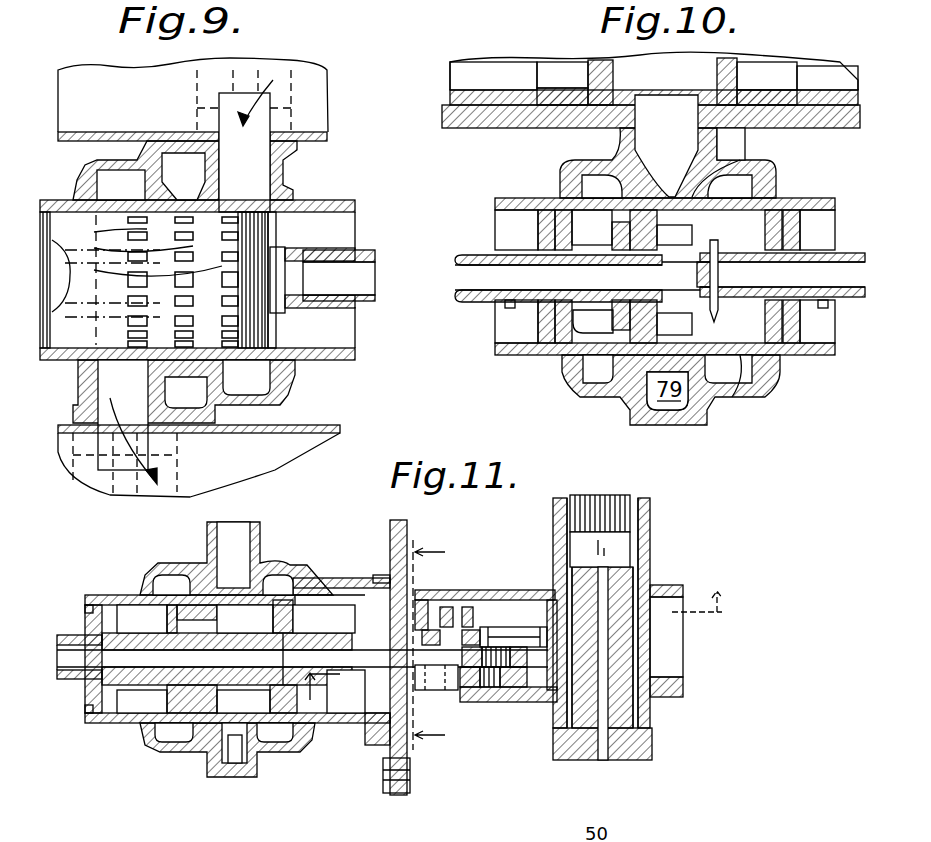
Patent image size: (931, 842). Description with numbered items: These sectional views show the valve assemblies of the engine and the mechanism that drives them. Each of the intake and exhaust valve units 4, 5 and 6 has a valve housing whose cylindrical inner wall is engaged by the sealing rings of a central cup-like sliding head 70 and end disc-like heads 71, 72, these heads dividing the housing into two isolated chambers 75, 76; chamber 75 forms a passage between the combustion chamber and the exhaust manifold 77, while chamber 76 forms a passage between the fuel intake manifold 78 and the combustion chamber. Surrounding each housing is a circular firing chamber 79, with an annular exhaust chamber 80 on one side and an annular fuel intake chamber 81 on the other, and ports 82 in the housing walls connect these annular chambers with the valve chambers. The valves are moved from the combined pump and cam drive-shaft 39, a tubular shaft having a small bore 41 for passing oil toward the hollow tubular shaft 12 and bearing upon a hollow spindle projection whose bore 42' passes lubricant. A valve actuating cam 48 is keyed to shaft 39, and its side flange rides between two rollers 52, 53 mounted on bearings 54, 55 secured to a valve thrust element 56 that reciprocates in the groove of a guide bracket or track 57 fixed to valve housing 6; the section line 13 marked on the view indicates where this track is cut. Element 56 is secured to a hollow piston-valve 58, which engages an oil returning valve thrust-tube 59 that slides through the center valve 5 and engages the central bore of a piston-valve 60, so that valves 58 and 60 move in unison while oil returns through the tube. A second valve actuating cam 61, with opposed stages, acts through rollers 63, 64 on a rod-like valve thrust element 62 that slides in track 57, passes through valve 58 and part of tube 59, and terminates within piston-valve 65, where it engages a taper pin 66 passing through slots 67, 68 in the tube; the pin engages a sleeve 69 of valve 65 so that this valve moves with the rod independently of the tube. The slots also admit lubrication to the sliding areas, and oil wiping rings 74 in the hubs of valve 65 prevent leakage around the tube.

In FIG. 9, the intake and exhaust valve unit 4 is at (334, 200).
In FIG. 10, the center valve 5 is at (497, 199).
In FIG. 11, the valve housing 6 is at (172, 768).
In FIG. 11, the hollow tubular shaft 12 is at (519, 636).
In FIG. 11, the section line 13 is at (443, 644).
In FIG. 11, the combined pump and cam drive-shaft 39 is at (650, 530).
In FIG. 11, the small bore 41 is at (605, 760).
In FIG. 11, the bore 42' is at (628, 511).
In FIG. 11, the valve actuating cam 48 is at (670, 587).
In FIG. 11, the roller 52 is at (450, 612).
In FIG. 11, the roller 53 is at (474, 615).
In FIG. 11, the bearing 54 is at (360, 578).
In FIG. 11, the bearing 55 is at (505, 593).
In FIG. 11, the valve thrust element 56 is at (432, 622).
In FIG. 11, the guide bracket or track 57 is at (545, 612).
In FIG. 11, the hollow piston-valve 58 is at (145, 640).
In FIG. 9, the oil returning valve thrust-tube 59 is at (362, 250).
In FIG. 10, the oil returning valve thrust-tube 59 is at (478, 255).
In FIG. 11, the oil returning valve thrust-tube 59 is at (84, 682).
In FIG. 9, the piston-valve 60 is at (268, 229).
In FIG. 11, the valve actuating cam 61 is at (686, 697).
In FIG. 11, the valve thrust element 62 is at (358, 723).
In FIG. 11, the roller 63 is at (447, 690).
In FIG. 11, the roller 64 is at (532, 702).
In FIG. 10, the piston-valve 65 is at (540, 328).
In FIG. 10, the taper pin 66 is at (765, 199).
In FIG. 10, the slot 67 is at (720, 258).
In FIG. 10, the slot 68 is at (770, 360).
In FIG. 10, the sleeve 69 is at (815, 253).
In FIG. 10, the central cup-like sliding head 70 is at (718, 155).
In FIG. 11, the central cup-like sliding head 70 is at (227, 755).
In FIG. 10, the end disc-like head 71 is at (528, 212).
In FIG. 11, the end disc-like head 71 is at (86, 612).
In FIG. 10, the end disc-like head 72 is at (800, 200).
In FIG. 11, the end disc-like head 72 is at (285, 600).
In FIG. 10, the oil wiping ring 74 is at (505, 305).
In FIG. 10, the chamber 75 is at (603, 334).
In FIG. 11, the chamber 75 is at (152, 710).
In FIG. 10, the chamber 76 is at (735, 398).
In FIG. 11, the chamber 76 is at (254, 710).
In FIG. 9, the exhaust manifold 77 is at (98, 400).
In FIG. 9, the fuel intake manifold 78 is at (290, 94).
In FIG. 9, the firing chamber 79 is at (196, 406).
In FIG. 10, the firing chamber 79 is at (681, 151).
In FIG. 11, the firing chamber 79 is at (236, 765).
In FIG. 9, the annular exhaust chamber 80 is at (97, 180).
In FIG. 10, the annular exhaust chamber 80 is at (610, 197).
In FIG. 11, the annular exhaust chamber 80 is at (172, 745).
In FIG. 9, the annular fuel intake chamber 81 is at (258, 384).
In FIG. 10, the annular fuel intake chamber 81 is at (745, 194).
In FIG. 11, the annular fuel intake chamber 81 is at (283, 748).
In FIG. 10, the port 82 is at (598, 350).